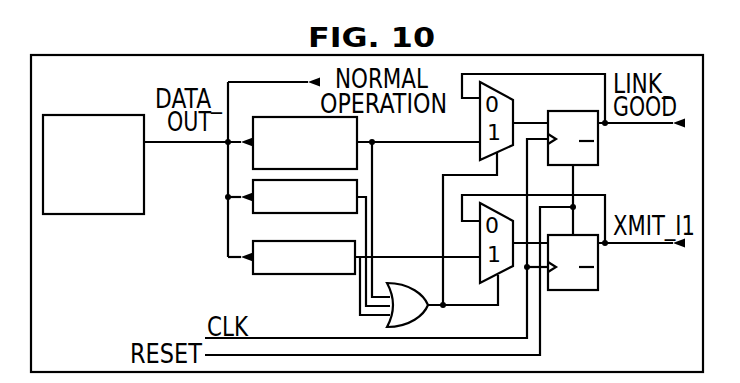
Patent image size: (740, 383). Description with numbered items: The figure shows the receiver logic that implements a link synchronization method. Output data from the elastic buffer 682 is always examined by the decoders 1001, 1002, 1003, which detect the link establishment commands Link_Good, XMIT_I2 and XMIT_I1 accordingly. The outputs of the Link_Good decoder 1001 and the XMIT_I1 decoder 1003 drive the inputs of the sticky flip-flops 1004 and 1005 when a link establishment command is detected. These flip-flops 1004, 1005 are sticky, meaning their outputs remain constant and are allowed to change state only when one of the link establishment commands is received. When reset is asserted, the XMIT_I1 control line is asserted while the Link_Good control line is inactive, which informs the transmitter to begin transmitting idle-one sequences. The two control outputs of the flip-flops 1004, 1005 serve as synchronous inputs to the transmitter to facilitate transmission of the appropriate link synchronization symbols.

The elastic buffer 682 is at (110, 215).
The Link_Good decoder 1001 is at (409, 143).
The XMIT_I2 decoder 1002 is at (366, 224).
The XMIT_I1 decoder 1003 is at (360, 309).
The sticky flip-flop 1004 is at (598, 152).
The sticky flip-flop 1005 is at (598, 278).